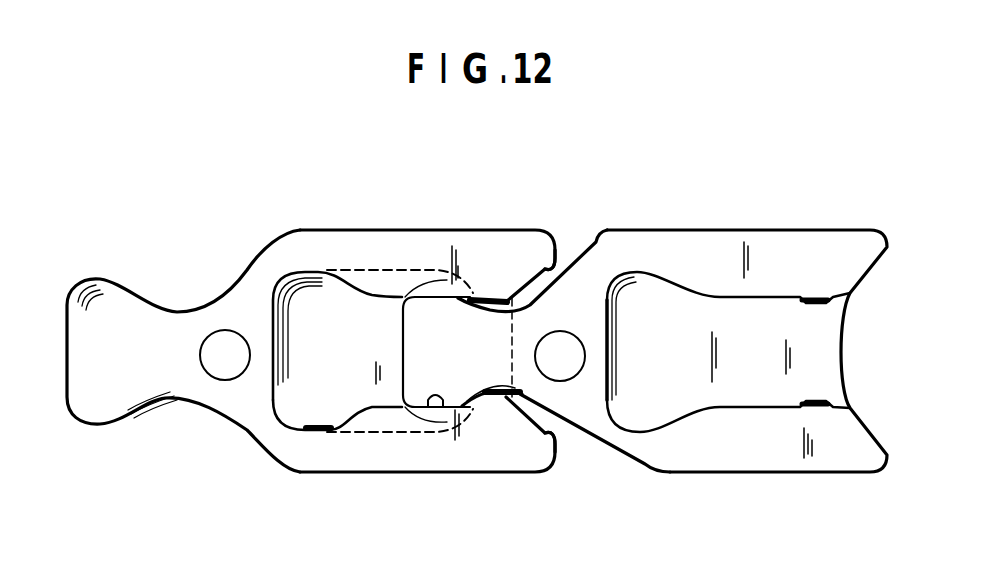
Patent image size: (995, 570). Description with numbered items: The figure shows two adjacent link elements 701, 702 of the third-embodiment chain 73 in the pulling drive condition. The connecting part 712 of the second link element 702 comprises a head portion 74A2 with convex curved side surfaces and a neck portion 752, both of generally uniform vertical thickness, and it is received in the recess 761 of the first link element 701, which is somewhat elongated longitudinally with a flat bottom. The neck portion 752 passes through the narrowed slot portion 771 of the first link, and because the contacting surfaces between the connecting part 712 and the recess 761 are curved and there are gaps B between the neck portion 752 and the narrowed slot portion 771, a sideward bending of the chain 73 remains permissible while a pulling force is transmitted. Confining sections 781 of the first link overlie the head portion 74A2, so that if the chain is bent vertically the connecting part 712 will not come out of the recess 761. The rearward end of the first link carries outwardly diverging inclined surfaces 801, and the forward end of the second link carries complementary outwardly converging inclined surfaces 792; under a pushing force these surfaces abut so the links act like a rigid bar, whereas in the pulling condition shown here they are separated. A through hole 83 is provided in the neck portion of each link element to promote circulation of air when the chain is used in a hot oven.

The link element 701 is at (318, 222).
The link element 702 is at (760, 212).
The connecting part 712 is at (398, 331).
The chain 73 is at (620, 188).
The head portion 74A2 is at (370, 364).
The neck portion 752 is at (495, 380).
The recess 761 is at (298, 408).
The narrowed slot portion 771 is at (433, 405).
The confining sections 781 is at (393, 278).
The inclined surfaces 792 is at (598, 243).
The inclined surfaces 801 is at (562, 256).
The through hole 83 is at (217, 372).
The gaps B is at (512, 298).